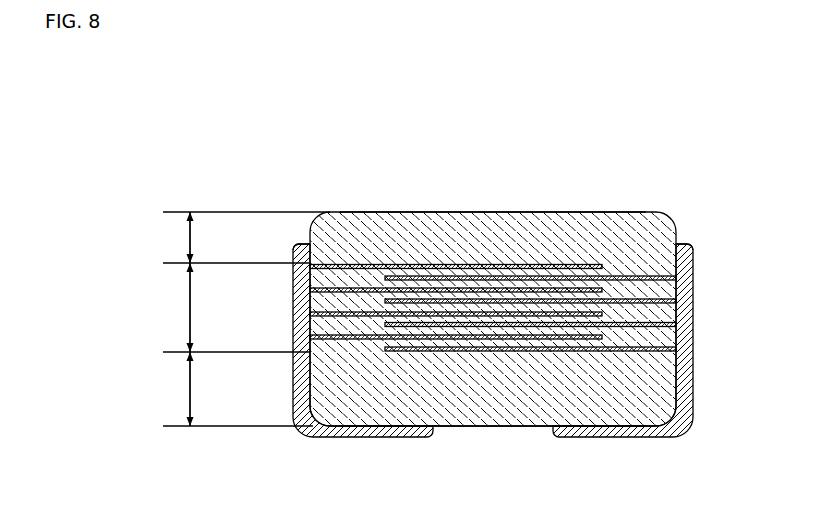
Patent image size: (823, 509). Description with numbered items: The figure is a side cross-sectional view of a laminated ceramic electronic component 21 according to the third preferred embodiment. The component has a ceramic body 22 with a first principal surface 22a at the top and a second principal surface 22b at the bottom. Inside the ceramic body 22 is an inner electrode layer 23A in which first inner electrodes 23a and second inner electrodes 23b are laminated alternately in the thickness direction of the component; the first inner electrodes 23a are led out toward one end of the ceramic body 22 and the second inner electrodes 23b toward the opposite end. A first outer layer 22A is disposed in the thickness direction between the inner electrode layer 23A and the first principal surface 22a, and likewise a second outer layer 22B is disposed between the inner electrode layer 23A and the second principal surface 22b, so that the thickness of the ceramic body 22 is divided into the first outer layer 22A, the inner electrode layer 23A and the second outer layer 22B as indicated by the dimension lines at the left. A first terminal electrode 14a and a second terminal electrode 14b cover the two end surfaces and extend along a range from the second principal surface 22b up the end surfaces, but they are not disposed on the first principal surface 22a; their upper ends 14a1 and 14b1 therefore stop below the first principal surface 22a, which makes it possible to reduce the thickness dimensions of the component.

The laminated ceramic electronic component 21 is at (245, 165).
The ceramic body 22 is at (524, 210).
The first principal surface 22a is at (468, 212).
The second principal surface 22b is at (473, 428).
The first outer layer 22A is at (239, 237).
The inner electrode layer 23A is at (229, 307).
The second outer layer 22B is at (230, 389).
The first inner electrode 23a is at (332, 268).
The second inner electrode 23b is at (660, 278).
The first terminal electrode 14a is at (293, 378).
The end of first external electrode 14a1 is at (300, 244).
The second terminal electrode 14b is at (694, 378).
The end of second external electrode 14b1 is at (685, 243).